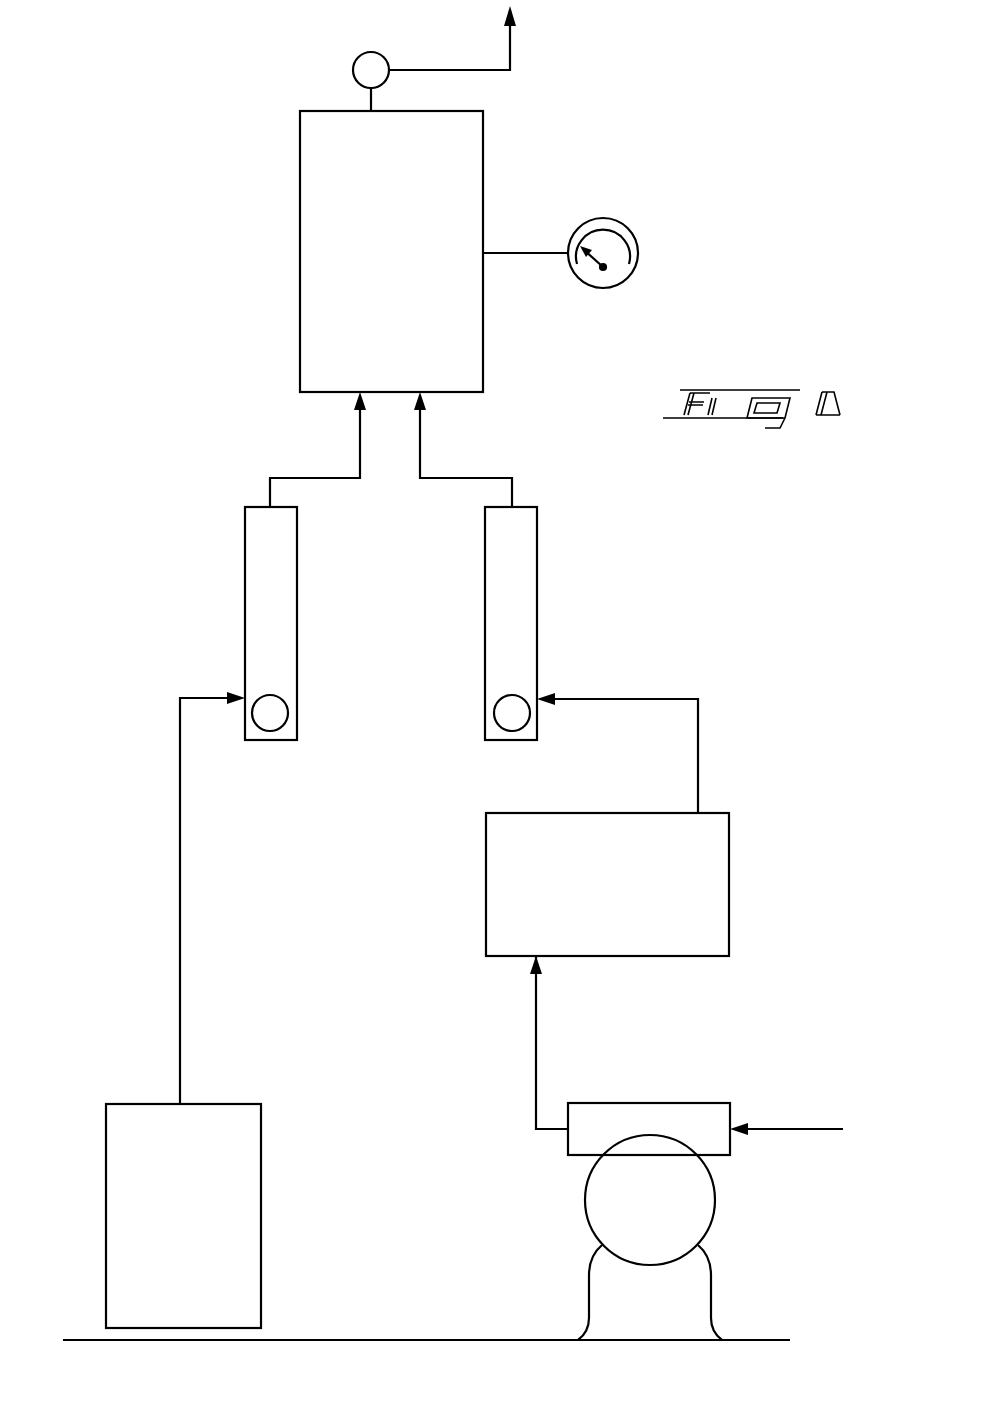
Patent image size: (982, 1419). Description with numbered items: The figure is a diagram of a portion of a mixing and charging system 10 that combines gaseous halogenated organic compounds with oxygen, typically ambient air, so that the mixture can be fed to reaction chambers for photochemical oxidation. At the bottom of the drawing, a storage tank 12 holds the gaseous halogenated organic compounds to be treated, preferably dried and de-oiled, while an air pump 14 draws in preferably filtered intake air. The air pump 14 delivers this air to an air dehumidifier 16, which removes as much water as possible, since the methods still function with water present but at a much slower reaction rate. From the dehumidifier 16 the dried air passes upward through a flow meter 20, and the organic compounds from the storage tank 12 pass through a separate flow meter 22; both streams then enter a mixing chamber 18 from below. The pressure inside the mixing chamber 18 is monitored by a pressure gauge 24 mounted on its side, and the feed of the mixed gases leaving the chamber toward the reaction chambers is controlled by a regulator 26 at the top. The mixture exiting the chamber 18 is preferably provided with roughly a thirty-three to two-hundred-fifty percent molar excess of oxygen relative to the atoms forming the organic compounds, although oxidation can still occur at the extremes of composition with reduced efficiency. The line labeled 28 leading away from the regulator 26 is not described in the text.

The mixing and charging system 10 is at (624, 165).
The storage tank 12 is at (121, 1190).
The air pump 14 is at (686, 1111).
The air dehumidifier 16 is at (718, 907).
The mixing chamber 18 is at (305, 258).
The flow meter 20 is at (520, 574).
The flow meter 22 is at (255, 557).
The pressure gauge 24 is at (630, 268).
The regulator 26 is at (365, 60).
The outlet line 28 is at (512, 57).